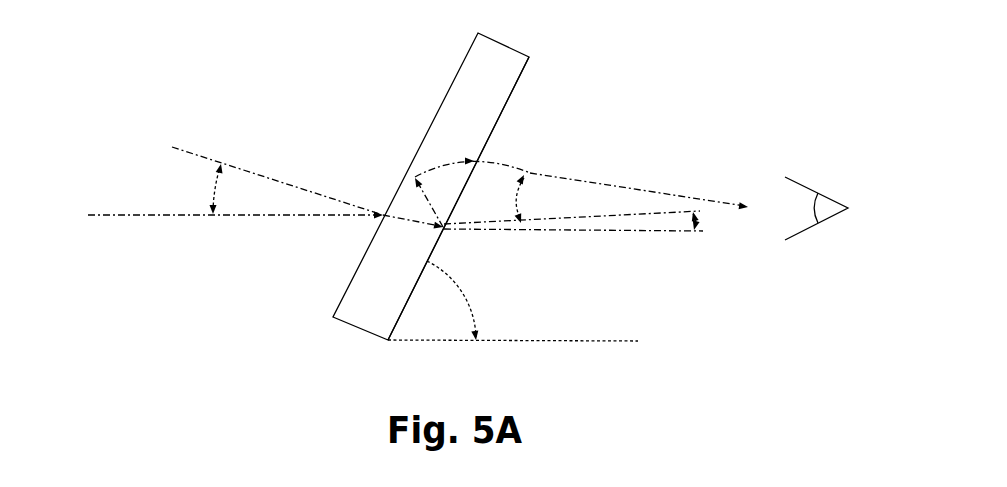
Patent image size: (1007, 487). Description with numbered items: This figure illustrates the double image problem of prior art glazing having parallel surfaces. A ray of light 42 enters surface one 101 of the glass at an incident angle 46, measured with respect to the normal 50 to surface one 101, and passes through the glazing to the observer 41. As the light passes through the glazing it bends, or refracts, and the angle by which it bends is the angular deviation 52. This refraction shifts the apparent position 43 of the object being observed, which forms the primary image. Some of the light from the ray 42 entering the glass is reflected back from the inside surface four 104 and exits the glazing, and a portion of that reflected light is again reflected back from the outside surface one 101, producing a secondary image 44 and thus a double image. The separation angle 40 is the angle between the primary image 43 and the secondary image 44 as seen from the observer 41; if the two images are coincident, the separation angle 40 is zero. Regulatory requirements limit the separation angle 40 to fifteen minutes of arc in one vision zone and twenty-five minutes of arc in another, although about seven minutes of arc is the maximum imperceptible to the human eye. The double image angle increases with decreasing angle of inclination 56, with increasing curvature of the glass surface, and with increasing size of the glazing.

The surface one 101 is at (462, 54).
The inside surface four 104 is at (536, 67).
The normal 50 is at (200, 148).
The incident angle 46 is at (193, 186).
The ray of light 42 is at (183, 222).
The apparent position / primary image 43 is at (452, 232).
The secondary image 44 is at (488, 154).
The separation angle 40 is at (539, 191).
The observer 41 is at (858, 197).
The angular deviation 52 is at (706, 231).
The angle of inclination 56 is at (470, 288).